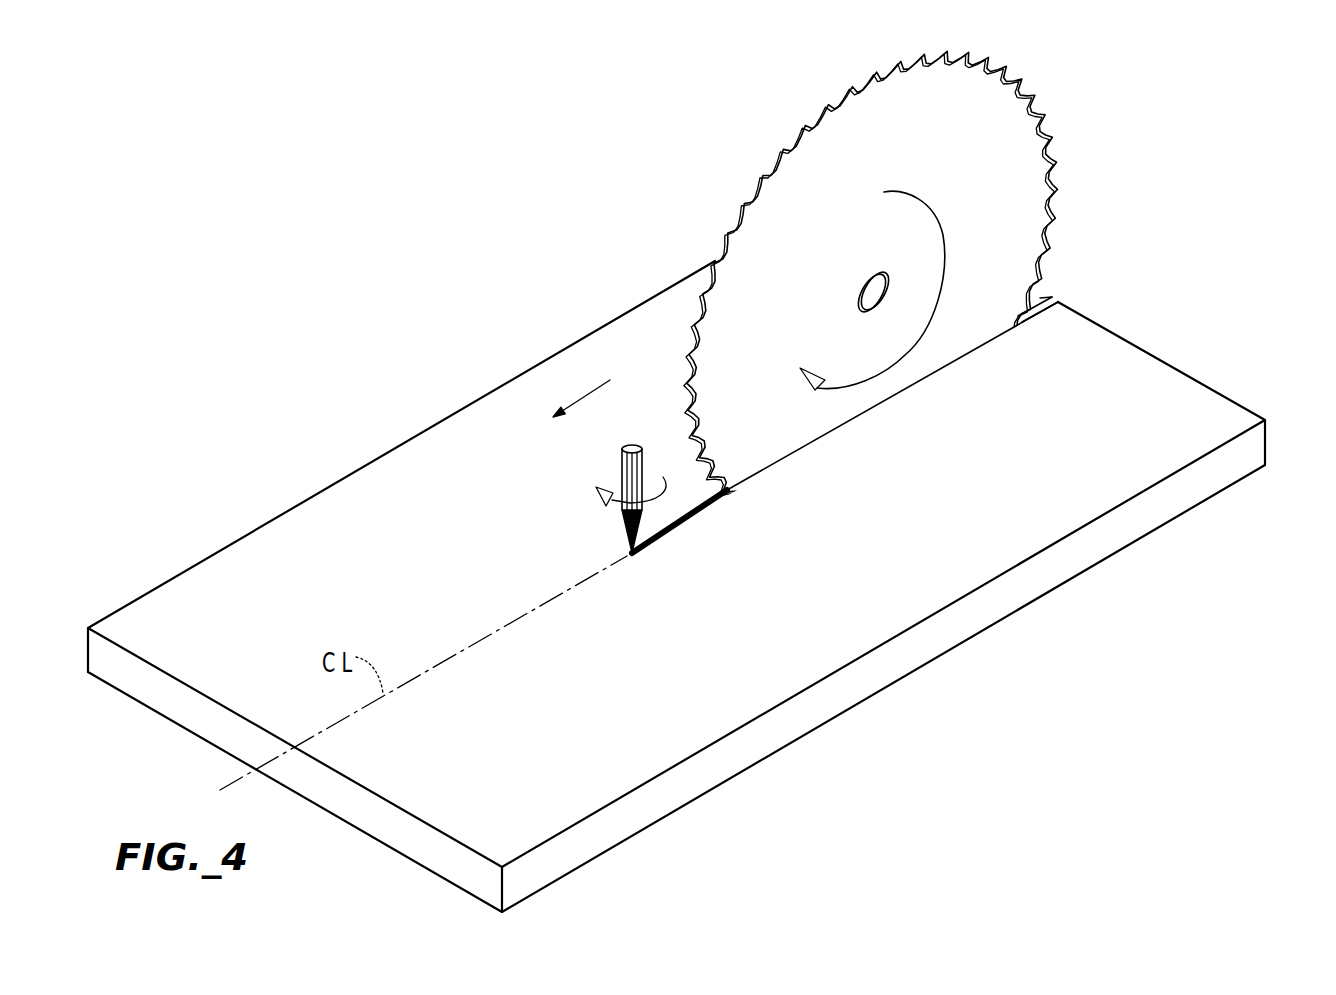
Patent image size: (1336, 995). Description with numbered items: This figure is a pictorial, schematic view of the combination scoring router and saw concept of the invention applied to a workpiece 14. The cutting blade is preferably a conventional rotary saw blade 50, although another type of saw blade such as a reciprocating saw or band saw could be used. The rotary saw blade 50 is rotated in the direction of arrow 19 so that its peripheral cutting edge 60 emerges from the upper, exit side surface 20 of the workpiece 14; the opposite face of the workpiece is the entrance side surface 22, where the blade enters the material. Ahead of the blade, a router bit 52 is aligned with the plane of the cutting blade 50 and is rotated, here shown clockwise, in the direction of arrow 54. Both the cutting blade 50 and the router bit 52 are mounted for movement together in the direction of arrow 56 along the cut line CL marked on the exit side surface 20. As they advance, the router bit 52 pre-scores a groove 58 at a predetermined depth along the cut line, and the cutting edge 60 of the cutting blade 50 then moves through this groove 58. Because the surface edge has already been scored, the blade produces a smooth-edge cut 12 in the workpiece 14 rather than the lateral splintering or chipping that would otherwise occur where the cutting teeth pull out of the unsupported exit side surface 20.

The cut 12 is at (1068, 296).
The workpiece 14 is at (711, 586).
The arrow 19 is at (917, 279).
The exit side surface 20 is at (1042, 445).
The entrance side surface 22 is at (1132, 555).
The rotary saw blade 50 is at (1010, 243).
The router bit 52 is at (623, 470).
The arrow 54 is at (647, 503).
The arrow 56 is at (582, 395).
The groove 58 is at (708, 515).
The peripheral cutting edge 60 is at (755, 193).